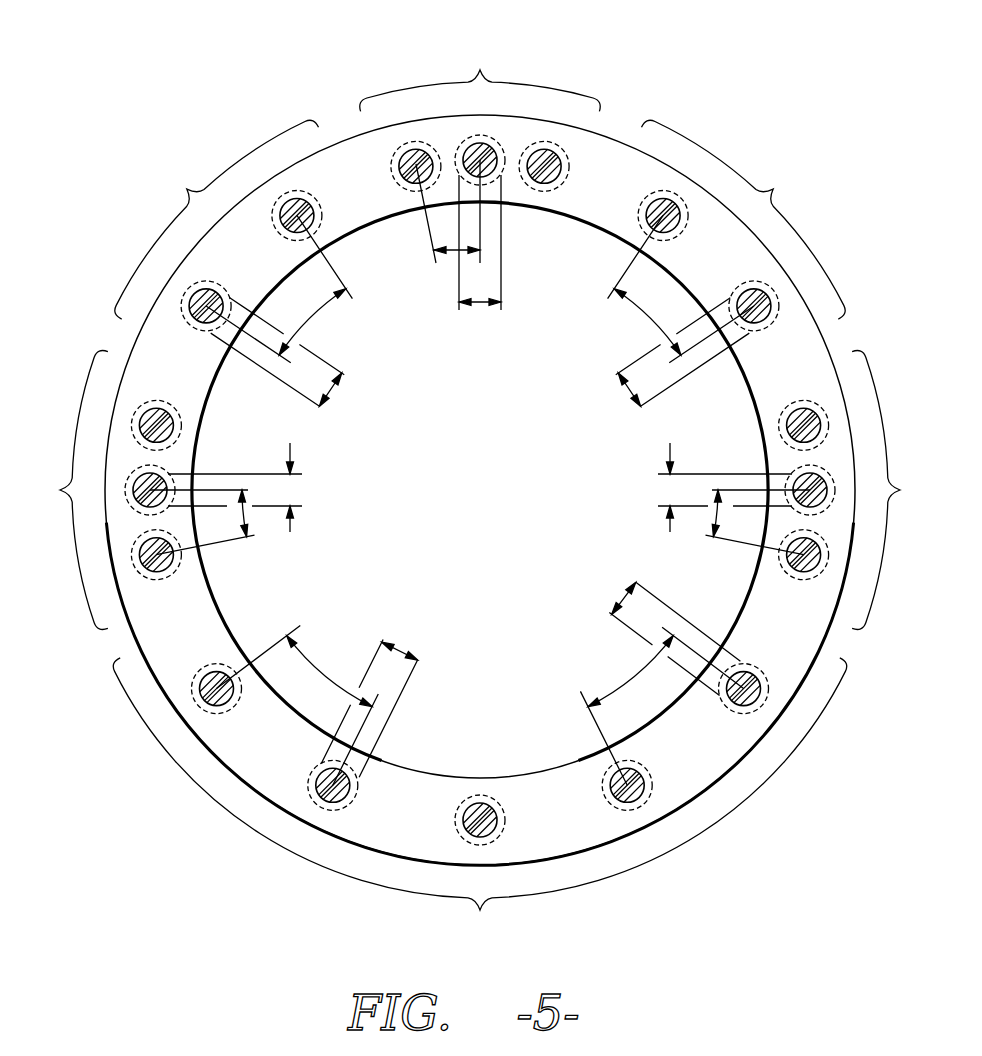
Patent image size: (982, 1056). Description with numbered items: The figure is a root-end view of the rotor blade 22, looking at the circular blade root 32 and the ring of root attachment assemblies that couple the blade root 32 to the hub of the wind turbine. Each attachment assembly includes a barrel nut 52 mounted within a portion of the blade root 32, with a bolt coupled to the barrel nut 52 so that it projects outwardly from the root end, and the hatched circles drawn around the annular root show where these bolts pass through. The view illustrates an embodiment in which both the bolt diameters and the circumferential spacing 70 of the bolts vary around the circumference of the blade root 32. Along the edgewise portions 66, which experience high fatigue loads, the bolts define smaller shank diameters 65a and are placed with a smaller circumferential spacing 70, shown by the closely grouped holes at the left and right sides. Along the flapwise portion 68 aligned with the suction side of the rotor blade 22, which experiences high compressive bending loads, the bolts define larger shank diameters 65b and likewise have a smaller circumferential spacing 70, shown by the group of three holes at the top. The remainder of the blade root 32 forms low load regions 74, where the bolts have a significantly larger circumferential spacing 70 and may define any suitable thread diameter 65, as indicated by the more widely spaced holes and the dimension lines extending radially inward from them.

The rotor blade 22 is at (213, 105).
The blade root 32 is at (285, 158).
The barrel nut 52 is at (612, 155).
The thread diameter 65 is at (331, 392).
The smaller shank diameter 65a is at (293, 489).
The larger shank diameter 65b is at (482, 306).
The edgewise portions 66 is at (84, 372).
The flapwise portion 68 is at (480, 112).
The circumferential spacing 70 is at (458, 252).
The low load regions 74 is at (479, 535).